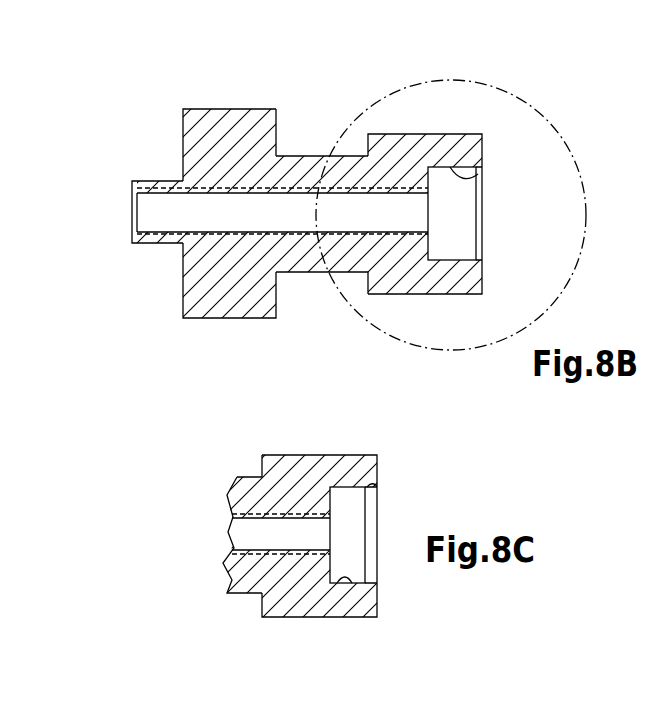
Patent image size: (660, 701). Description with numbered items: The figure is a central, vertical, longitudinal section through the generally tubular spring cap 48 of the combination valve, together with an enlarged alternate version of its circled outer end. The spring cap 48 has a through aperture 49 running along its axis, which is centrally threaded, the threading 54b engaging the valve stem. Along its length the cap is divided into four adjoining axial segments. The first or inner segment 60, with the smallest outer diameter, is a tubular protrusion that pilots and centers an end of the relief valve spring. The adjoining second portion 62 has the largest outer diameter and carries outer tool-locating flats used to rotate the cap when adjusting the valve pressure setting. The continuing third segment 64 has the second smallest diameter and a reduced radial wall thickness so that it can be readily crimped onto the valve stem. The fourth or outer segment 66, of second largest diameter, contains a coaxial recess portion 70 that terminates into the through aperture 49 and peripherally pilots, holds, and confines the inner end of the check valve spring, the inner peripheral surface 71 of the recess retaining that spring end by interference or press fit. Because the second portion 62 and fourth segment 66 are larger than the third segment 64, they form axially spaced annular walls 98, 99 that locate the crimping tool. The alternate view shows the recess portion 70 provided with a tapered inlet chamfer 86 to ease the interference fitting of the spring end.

In FIG. 8B, the spring cap 48 is at (338, 112).
In FIG. 8C, the spring cap 48 is at (316, 628).
In FIG. 8B, the through aperture 49 is at (158, 210).
In FIG. 8C, the through aperture 49 is at (248, 537).
In FIG. 8B, the central threading 54b is at (240, 233).
In FIG. 8B, the first or inner segment 60 is at (151, 243).
In FIG. 8B, the second portion 62 is at (232, 109).
In FIG. 8B, the third segment 64 is at (297, 258).
In FIG. 8B, the fourth or outer segment 66 is at (425, 152).
In FIG. 8C, the fourth or outer segment 66 is at (293, 483).
In FIG. 8B, the coaxial recess portion 70 is at (482, 177).
In FIG. 8C, the coaxial recess portion 70 is at (343, 487).
In FIG. 8C, the inner peripheral surface 71 is at (336, 584).
In FIG. 8C, the inlet chamfer 86 is at (376, 490).
In FIG. 8B, the annular wall 98 is at (277, 134).
In FIG. 8B, the annular wall 99 is at (368, 283).
In FIG. 8C, the annular wall 99 is at (262, 468).